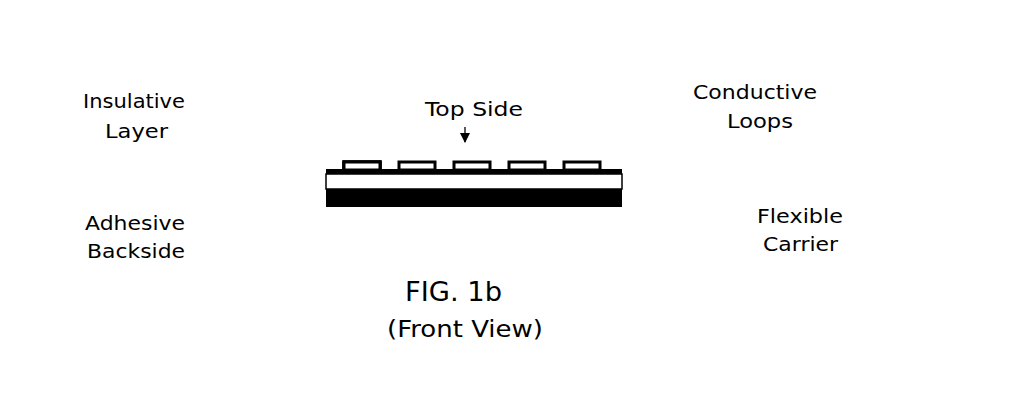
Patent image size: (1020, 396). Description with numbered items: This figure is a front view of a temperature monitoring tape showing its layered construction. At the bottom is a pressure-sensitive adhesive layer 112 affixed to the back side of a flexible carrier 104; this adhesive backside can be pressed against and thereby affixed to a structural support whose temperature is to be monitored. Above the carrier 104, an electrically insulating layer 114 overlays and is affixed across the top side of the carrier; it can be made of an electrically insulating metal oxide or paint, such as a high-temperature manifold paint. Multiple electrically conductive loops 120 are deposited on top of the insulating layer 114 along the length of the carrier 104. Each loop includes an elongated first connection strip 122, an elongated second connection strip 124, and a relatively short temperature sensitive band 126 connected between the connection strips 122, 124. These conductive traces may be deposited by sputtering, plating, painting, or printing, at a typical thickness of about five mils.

The flexible carrier 104 is at (624, 183).
The pressure-sensitive adhesive layer 112 is at (324, 195).
The electrically insulating layer 114 is at (326, 169).
The electrically conductive loops 120 is at (586, 158).
The first connection strip 122 is at (348, 162).
The second connection strip 124 is at (378, 162).
The temperature sensitive band 126 is at (359, 162).